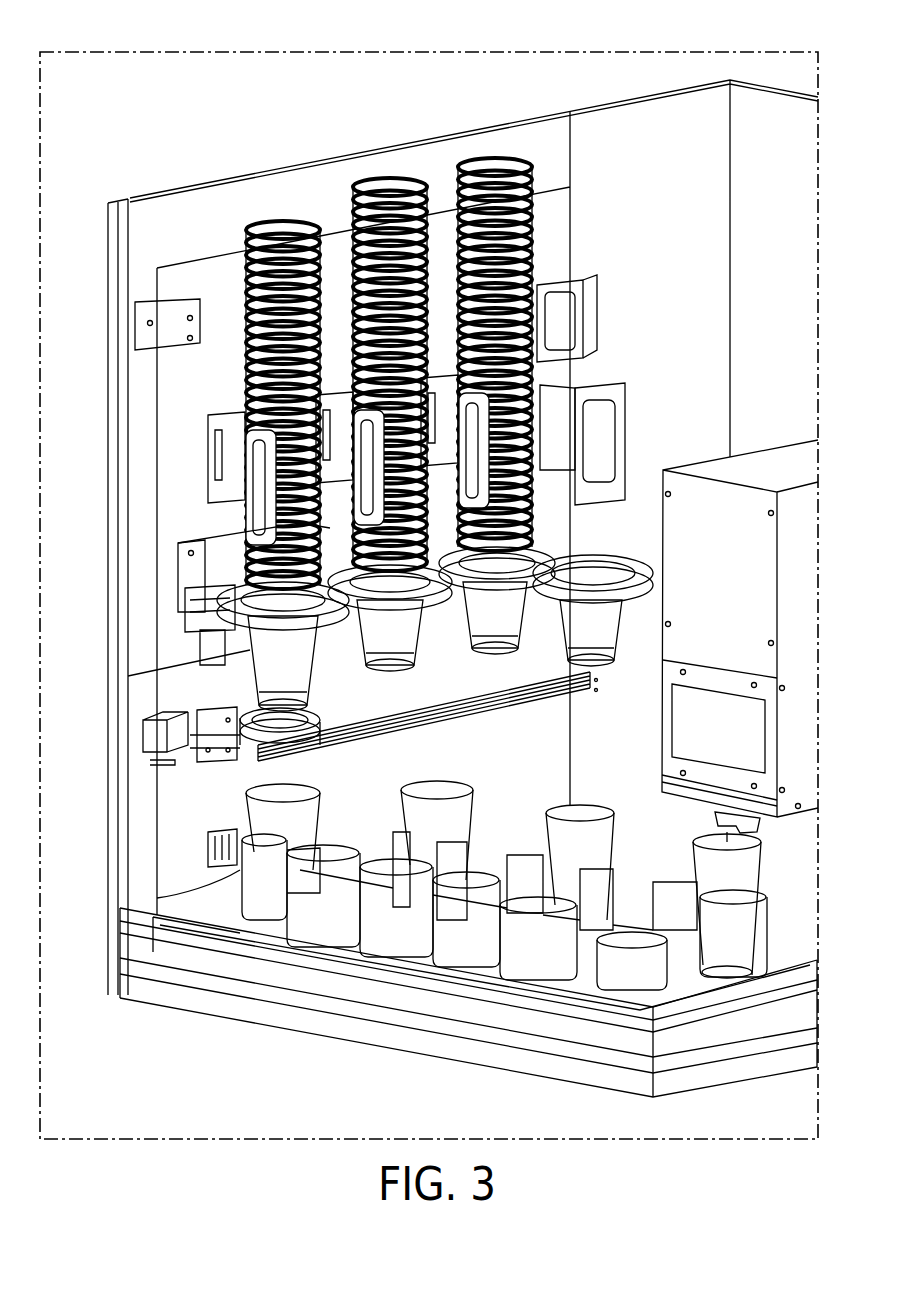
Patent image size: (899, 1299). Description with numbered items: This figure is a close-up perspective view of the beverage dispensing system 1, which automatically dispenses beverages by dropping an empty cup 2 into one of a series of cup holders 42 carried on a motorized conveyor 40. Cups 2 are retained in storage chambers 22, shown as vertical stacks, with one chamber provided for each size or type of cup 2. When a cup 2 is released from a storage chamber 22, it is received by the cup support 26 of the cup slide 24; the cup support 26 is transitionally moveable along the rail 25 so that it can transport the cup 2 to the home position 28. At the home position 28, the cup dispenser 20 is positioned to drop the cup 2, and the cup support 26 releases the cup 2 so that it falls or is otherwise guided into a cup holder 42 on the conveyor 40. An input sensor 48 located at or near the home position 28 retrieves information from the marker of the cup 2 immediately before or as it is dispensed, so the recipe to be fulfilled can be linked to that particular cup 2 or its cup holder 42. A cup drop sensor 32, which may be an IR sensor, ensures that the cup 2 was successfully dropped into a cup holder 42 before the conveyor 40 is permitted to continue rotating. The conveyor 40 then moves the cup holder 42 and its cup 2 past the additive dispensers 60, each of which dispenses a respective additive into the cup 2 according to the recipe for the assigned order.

The beverage dispensing system 1 is at (790, 46).
The cup 2 is at (300, 813).
The cup dispenser 20 is at (293, 643).
The storage chamber 22 is at (279, 212).
The cup slide 24 is at (548, 712).
The rail 25 is at (465, 716).
The cup support 26 is at (318, 718).
The home position 28 is at (148, 733).
The cup drop sensor 32 is at (190, 628).
The motorized conveyor 40 is at (718, 1005).
The cup holder 42 is at (320, 933).
The input sensor 48 is at (240, 870).
The additive dispenser 60 is at (731, 559).